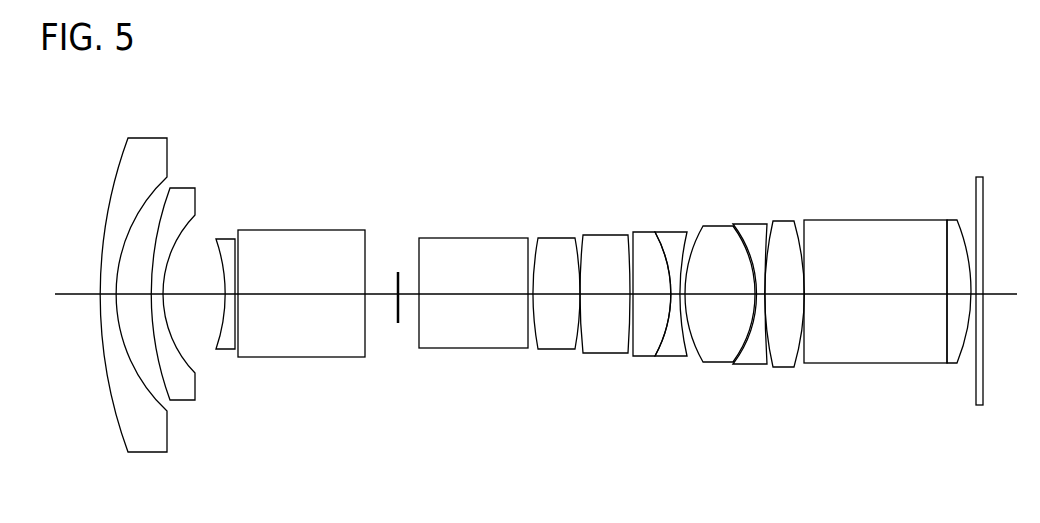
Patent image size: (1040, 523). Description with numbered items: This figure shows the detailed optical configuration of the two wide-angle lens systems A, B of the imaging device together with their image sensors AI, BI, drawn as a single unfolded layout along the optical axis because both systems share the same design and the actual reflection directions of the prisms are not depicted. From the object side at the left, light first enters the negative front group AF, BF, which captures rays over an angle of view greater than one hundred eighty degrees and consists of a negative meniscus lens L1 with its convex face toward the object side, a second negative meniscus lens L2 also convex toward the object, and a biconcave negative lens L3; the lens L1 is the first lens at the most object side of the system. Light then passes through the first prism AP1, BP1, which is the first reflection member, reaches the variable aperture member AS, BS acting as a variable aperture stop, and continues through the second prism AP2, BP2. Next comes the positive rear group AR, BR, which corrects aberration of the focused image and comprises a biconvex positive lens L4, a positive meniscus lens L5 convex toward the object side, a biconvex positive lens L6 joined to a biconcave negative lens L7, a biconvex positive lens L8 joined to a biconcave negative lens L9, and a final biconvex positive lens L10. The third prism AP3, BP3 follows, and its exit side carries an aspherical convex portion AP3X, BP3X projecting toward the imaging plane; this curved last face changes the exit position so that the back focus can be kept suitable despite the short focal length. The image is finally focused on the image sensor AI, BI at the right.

The optical system A, B is at (752, 90).
The front lens group AF, BF is at (203, 130).
The negative meniscus lens L1 is at (147, 440).
The negative meniscus lens L2 is at (183, 393).
The biconcave negative lens L3 is at (225, 340).
The first prism AP1, BP1 is at (363, 214).
The aperture stop AS, BS is at (398, 272).
The second prism AP2, BP2 is at (527, 210).
The rear lens group AR, BR is at (797, 175).
The biconvex positive lens L4 is at (558, 342).
The positive meniscus lens L5 is at (603, 345).
The biconvex positive lens L6 is at (643, 345).
The biconcave negative lens L7 is at (677, 350).
The biconvex positive lens L8 is at (717, 353).
The biconcave negative lens L9 is at (752, 353).
The biconvex positive lens L10 is at (783, 363).
The third prism AP3, BP3 is at (962, 177).
The third prism exit surface lens AP3X, BP3X is at (952, 355).
The image plane AI, BI is at (980, 408).